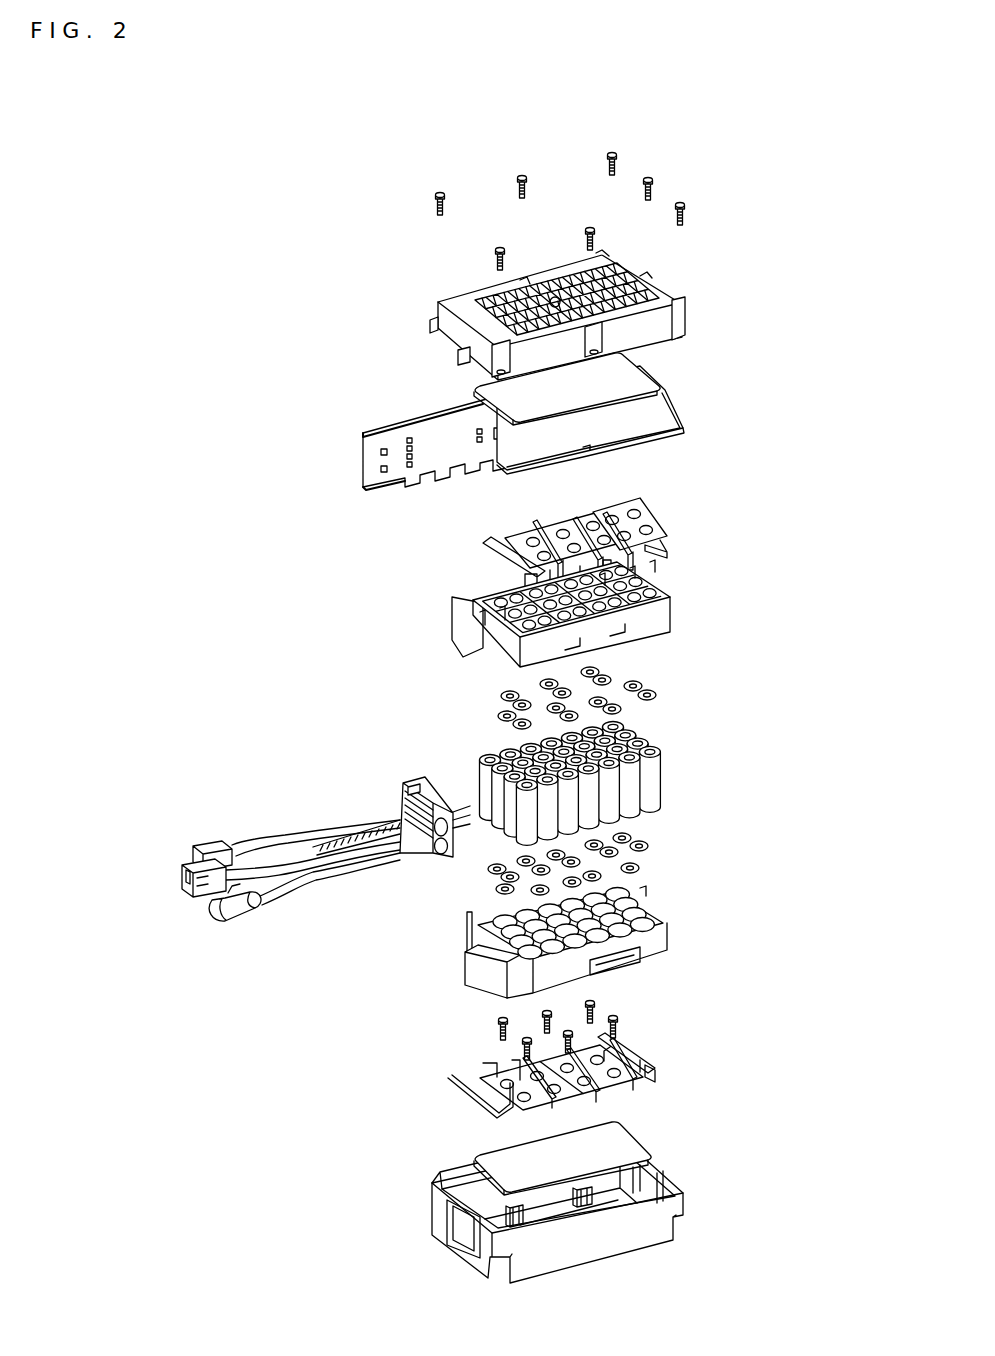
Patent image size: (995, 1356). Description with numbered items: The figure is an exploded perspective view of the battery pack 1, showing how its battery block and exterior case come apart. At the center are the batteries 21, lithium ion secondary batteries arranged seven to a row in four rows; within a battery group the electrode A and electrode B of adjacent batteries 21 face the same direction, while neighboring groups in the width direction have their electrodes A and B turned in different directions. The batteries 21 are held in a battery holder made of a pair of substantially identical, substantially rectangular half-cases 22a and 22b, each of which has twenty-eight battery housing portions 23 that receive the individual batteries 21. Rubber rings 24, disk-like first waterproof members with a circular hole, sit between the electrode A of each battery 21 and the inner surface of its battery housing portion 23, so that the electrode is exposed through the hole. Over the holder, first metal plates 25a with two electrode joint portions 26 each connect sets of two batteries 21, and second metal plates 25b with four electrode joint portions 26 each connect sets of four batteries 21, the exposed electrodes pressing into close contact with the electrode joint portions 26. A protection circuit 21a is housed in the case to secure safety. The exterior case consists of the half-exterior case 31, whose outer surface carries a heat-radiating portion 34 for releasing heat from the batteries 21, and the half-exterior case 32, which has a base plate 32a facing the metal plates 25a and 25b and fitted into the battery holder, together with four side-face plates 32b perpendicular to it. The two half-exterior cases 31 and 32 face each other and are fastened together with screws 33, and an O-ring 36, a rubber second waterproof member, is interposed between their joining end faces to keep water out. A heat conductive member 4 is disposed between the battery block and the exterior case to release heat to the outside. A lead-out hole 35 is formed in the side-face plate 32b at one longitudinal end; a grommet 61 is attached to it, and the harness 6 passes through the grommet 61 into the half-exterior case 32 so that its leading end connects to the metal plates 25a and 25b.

The battery pack 1 is at (215, 287).
The screws 33 is at (684, 202).
The half-exterior case 31 is at (676, 294).
The heat-radiating portion 34 is at (497, 300).
The heat conductive member 4 is at (640, 375).
The O-ring 36 is at (688, 420).
The protection circuit 21a is at (368, 448).
The electrode joint portions 26 is at (568, 520).
The second metal plates 25b is at (655, 532).
The first metal plates 25a is at (493, 550).
The battery housing portion 23 is at (650, 600).
The half-case 22a is at (672, 606).
The half-case 22b is at (670, 935).
The rubber rings 24 is at (656, 696).
The batteries 21 is at (690, 830).
The electrode A is at (495, 760).
The electrode B is at (507, 755).
The harness 6 is at (311, 880).
The grommet 61 is at (431, 860).
The half-exterior case 32 is at (656, 1250).
The base plate 32a is at (515, 1230).
The side-face plates 32b is at (448, 1195).
The lead-out hole 35 is at (458, 1250).